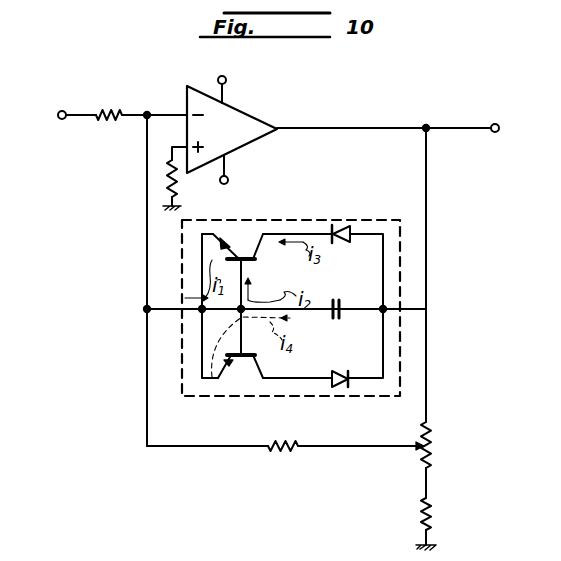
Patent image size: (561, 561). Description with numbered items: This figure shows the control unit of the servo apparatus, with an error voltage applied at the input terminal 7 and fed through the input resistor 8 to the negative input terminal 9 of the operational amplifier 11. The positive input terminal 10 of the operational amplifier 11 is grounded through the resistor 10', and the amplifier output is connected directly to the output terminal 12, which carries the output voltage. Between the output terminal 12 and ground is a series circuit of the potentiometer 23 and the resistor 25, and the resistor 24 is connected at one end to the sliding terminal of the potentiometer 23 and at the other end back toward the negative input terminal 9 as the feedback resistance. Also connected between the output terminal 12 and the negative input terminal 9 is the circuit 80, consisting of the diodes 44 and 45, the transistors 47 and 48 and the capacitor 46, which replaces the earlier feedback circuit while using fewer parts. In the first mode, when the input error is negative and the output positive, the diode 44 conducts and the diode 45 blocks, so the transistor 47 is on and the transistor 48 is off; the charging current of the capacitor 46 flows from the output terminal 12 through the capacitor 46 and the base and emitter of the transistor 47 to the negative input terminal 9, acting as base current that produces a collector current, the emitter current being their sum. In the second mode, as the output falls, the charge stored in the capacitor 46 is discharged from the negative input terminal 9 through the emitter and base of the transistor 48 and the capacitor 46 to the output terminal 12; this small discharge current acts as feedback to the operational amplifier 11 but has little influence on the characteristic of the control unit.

The input terminal 7 is at (62, 111).
The input resistor 8 is at (109, 118).
The negative input terminal 9 is at (175, 112).
The positive input terminal 10 is at (168, 141).
The resistor 10' is at (190, 185).
The operational amplifier 11 is at (257, 117).
The output terminal 12 is at (495, 123).
The potentiometer 23 is at (431, 450).
The resistor 24 is at (283, 451).
The resistor 25 is at (421, 512).
The diode 44 is at (344, 240).
The diode 45 is at (333, 376).
The capacitor 46 is at (340, 316).
The transistor 47 is at (256, 262).
The transistor 48 is at (228, 372).
The circuit 80 is at (372, 220).